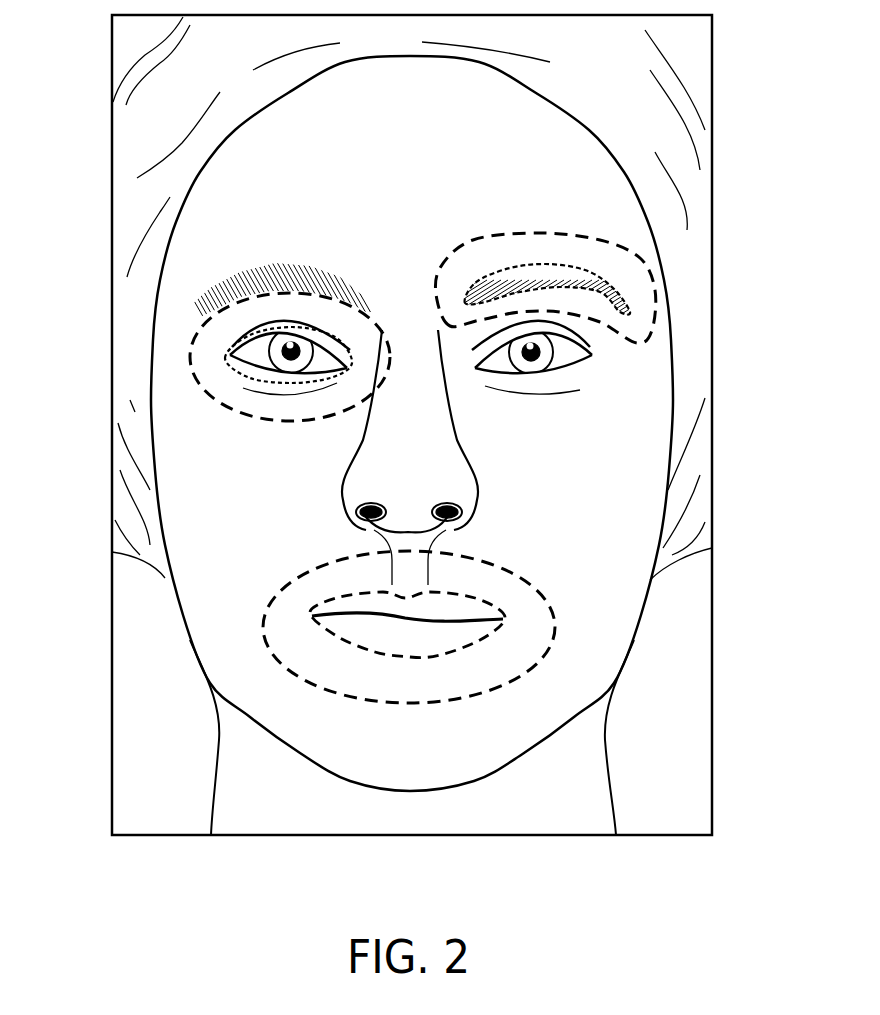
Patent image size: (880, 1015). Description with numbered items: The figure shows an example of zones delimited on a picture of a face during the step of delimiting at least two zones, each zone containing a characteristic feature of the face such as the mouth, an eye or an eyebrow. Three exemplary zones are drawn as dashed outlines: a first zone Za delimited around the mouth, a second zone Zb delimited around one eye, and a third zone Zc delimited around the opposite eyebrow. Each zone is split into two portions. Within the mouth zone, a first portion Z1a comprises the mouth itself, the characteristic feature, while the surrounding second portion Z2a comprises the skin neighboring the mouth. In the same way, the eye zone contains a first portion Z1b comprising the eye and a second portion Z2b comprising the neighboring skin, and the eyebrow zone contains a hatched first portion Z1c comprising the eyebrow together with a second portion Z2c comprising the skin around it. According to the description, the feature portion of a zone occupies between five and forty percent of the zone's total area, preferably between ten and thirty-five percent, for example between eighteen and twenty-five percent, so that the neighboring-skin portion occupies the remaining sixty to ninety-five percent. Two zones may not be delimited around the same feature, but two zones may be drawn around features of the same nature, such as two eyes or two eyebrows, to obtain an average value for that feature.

The first zone Za is at (282, 662).
The first portion of the first zone Z1a is at (450, 628).
The second portion of the first zone Z2a is at (412, 687).
The second zone Zb is at (205, 395).
The first portion of the second zone Z1b is at (237, 353).
The second portion of the second zone Z2b is at (208, 360).
The third zone Zc is at (658, 328).
The first portion of the third zone Z1c is at (588, 278).
The second portion of the third zone Z2c is at (647, 297).